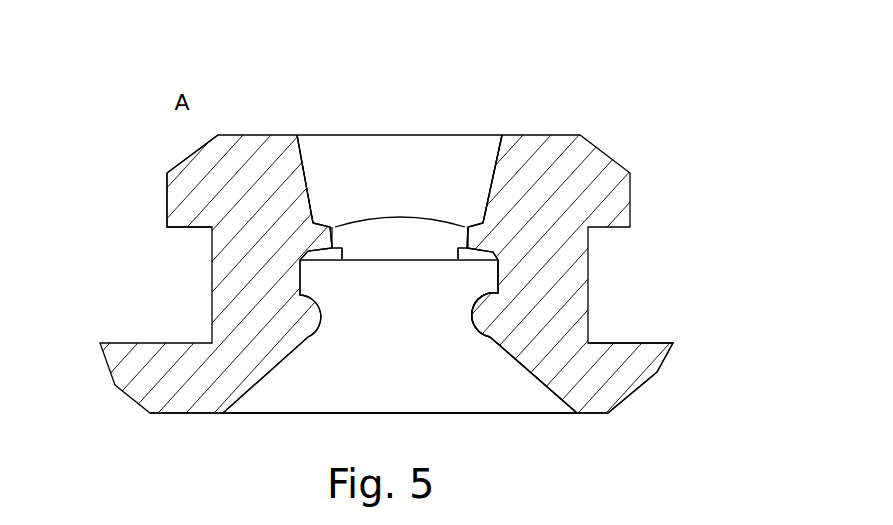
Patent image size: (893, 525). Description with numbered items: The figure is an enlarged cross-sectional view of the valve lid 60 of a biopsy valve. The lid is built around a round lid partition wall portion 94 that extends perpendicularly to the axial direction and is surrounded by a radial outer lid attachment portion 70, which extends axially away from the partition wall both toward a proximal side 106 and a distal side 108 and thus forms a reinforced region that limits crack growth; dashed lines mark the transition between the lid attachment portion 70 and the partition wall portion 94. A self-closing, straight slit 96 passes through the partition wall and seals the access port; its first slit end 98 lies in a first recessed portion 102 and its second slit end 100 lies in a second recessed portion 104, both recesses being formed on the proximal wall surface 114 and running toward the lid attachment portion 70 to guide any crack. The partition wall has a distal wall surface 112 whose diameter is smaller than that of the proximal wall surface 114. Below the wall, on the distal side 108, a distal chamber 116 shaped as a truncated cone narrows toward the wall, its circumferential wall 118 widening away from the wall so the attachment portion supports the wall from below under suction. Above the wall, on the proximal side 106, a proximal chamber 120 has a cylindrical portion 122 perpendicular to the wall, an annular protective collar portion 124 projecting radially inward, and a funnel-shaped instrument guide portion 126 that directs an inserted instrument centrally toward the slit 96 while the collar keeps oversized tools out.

The valve lid 60 is at (612, 138).
The radial outer lid attachment portion 70 is at (263, 230).
The lid partition wall portion 94 is at (450, 223).
The slit 96 is at (405, 224).
The first slit end 98 is at (315, 225).
The second slit end 100 is at (467, 226).
The first recessed portion 102 is at (316, 249).
The second recessed portion 104 is at (500, 259).
The proximal side 106 is at (330, 426).
The distal side 108 is at (408, 103).
The distal wall surface 112 is at (452, 222).
The proximal wall surface 114 is at (385, 259).
The distal chamber 116 is at (353, 152).
The circumferential wall 118 is at (499, 150).
The proximal chamber 120 is at (465, 372).
The cylindrical portion 122 is at (500, 285).
The annular protective collar portion 124 is at (478, 320).
The funnel-shaped instrument guide portion 126 is at (657, 371).